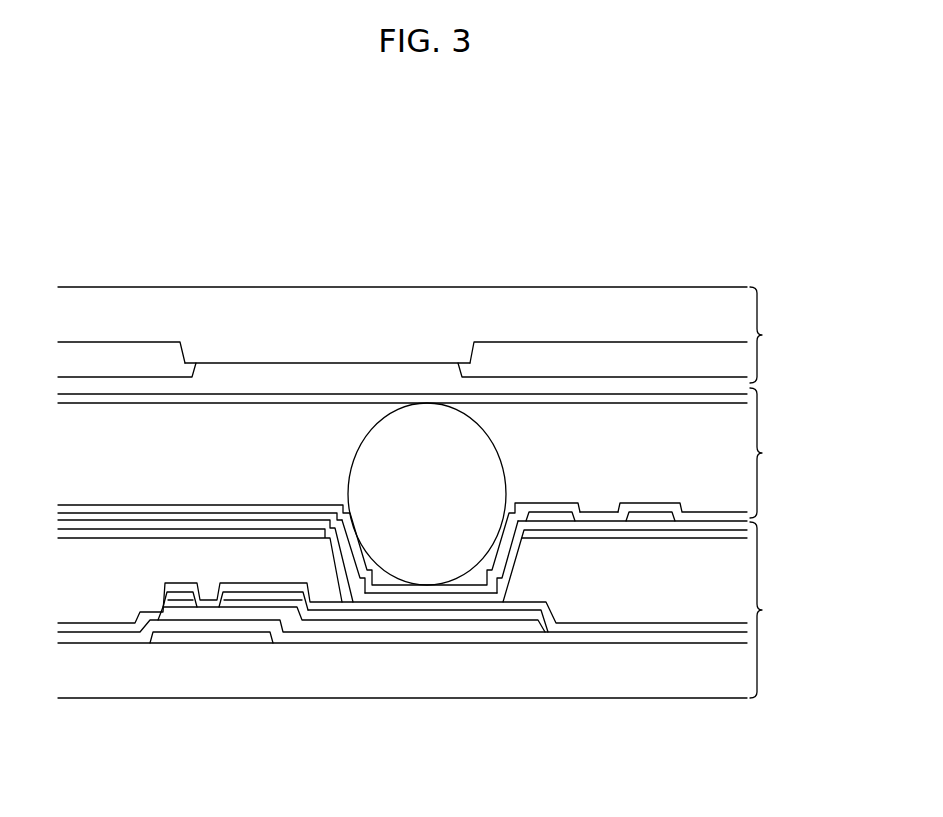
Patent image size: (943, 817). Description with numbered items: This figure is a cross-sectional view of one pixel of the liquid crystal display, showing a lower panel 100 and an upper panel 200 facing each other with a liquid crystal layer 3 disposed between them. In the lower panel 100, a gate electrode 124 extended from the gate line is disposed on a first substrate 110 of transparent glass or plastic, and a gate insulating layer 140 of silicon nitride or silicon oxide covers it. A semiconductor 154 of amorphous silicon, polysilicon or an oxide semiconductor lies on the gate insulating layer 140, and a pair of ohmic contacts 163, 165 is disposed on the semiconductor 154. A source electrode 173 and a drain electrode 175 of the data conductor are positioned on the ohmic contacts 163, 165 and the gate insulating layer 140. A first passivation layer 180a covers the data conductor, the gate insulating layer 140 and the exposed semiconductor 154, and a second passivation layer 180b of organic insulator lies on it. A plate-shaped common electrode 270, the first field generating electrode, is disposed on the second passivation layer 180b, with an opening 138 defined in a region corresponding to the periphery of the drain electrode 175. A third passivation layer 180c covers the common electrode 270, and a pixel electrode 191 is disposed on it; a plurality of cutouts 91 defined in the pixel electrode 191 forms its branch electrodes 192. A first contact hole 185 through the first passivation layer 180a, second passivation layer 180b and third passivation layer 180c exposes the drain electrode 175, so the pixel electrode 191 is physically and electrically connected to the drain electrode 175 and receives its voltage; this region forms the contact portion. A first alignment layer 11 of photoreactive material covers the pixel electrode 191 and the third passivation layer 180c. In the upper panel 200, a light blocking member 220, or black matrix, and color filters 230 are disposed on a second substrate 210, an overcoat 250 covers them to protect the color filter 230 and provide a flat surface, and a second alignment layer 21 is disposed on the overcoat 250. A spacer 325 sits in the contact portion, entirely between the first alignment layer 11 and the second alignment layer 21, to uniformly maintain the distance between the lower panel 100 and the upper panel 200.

The liquid crystal layer 3 is at (765, 453).
The first alignment layer 11 is at (88, 505).
The second alignment layer 21 is at (271, 403).
The cutouts 91 is at (605, 500).
The lower panel 100 is at (778, 610).
The first substrate 110 is at (715, 680).
The gate electrode 124 is at (212, 638).
The opening 138 is at (345, 592).
The gate insulating layer 140 is at (99, 630).
The semiconductor 154 is at (315, 627).
The ohmic contact 163 is at (175, 592).
The ohmic contact 165 is at (428, 612).
The source electrode 173 is at (186, 593).
The drain electrode 175 is at (495, 605).
The first passivation layer 180a is at (566, 626).
The second passivation layer 180b is at (638, 595).
The third passivation layer 180c is at (717, 518).
The first contact hole 185 is at (380, 602).
The pixel electrode 191 is at (555, 518).
The branch electrodes 192 is at (652, 515).
The upper panel 200 is at (778, 335).
The second substrate 210 is at (645, 308).
The light blocking member 220 is at (240, 357).
The color filter 230 is at (130, 357).
The overcoat 250 is at (335, 378).
The common electrode 270 is at (680, 533).
The spacer 325 is at (427, 420).